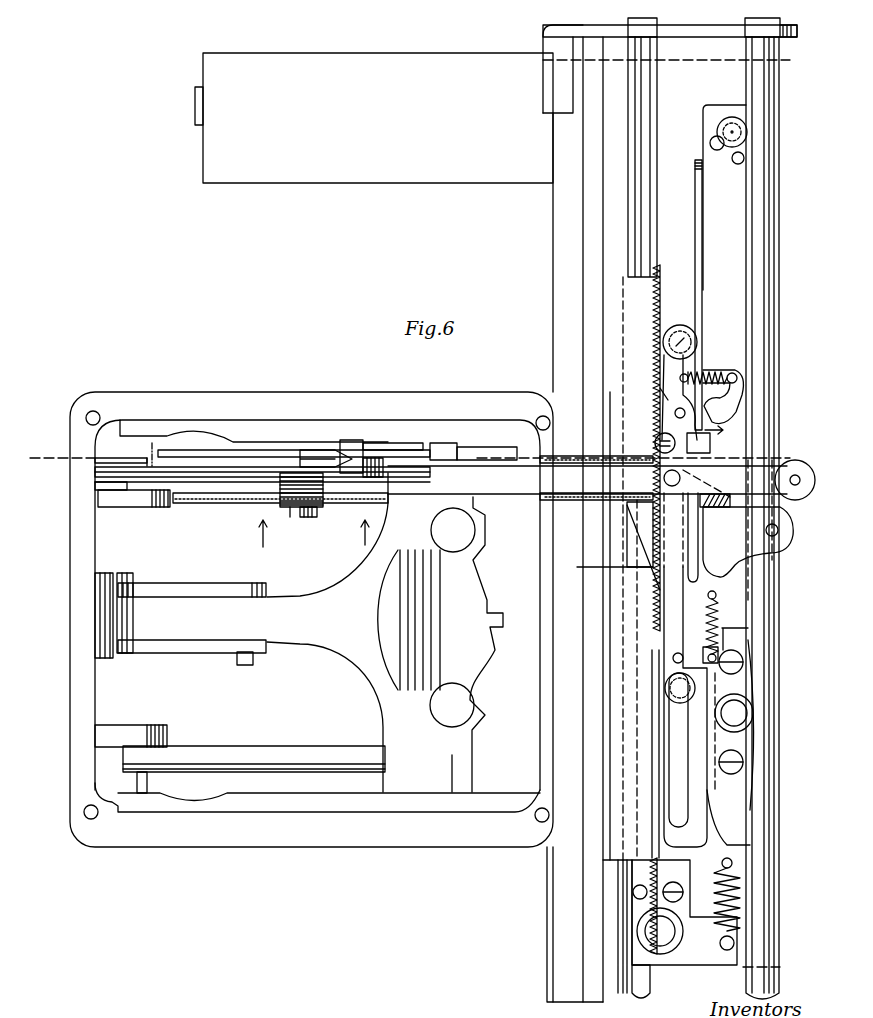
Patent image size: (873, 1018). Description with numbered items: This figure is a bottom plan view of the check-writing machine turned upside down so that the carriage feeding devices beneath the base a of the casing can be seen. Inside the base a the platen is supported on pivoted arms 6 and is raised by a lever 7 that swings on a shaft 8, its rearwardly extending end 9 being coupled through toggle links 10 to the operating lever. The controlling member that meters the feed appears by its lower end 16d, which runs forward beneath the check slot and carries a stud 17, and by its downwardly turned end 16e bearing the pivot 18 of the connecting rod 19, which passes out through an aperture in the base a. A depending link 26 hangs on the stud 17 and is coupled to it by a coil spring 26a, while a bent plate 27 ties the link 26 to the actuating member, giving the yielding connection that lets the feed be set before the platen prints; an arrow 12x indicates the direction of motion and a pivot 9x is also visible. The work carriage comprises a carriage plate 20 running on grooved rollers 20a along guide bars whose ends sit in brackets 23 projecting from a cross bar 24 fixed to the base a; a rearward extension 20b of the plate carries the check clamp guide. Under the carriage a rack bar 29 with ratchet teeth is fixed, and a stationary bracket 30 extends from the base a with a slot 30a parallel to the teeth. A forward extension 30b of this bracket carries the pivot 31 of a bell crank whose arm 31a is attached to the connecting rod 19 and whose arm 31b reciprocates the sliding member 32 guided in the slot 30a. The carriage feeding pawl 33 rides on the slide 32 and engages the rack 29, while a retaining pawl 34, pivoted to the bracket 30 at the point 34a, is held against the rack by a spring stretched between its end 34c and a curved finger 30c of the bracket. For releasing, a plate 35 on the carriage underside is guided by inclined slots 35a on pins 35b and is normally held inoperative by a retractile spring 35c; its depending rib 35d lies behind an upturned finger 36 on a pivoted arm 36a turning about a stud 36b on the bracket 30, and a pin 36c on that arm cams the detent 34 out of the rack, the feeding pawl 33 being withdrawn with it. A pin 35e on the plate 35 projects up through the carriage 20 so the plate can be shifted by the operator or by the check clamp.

The base a is at (311, 619).
The pivoted arms 6 is at (198, 505).
The lever 7 is at (458, 725).
The shaft 8 is at (415, 604).
The rearwardly extending end 9 is at (139, 615).
The pivot 9x is at (422, 467).
The toggle links 10 is at (214, 592).
The direction arrow 12x is at (293, 528).
The lower end of controlling member 16d is at (213, 450).
The depending end of controlling member 16e is at (328, 452).
The stud 17 is at (301, 516).
The pivot 18 is at (362, 438).
The connecting rod 19 is at (587, 468).
The carriage plate 20 is at (695, 210).
The rollers 20a is at (755, 713).
The rearward extension of carriage plate 20b is at (374, 118).
The brackets 23 is at (705, 28).
The cross bar 24 is at (553, 228).
The depending link 26 is at (383, 468).
The coil spring 26a is at (290, 518).
The bent plate 27 is at (182, 468).
The rack bar 29 is at (664, 338).
The stationary bracket 30 is at (675, 605).
The slot 30a is at (672, 782).
The forward extension of bracket 30b is at (770, 580).
The curved finger 30c is at (745, 392).
The pivot 31 is at (777, 538).
The bell crank arm 31a is at (752, 512).
The bell crank arm 31b is at (707, 494).
The sliding member 32 is at (672, 666).
The carriage feeding pawl 33 is at (600, 565).
The retaining pawl 34 is at (737, 380).
The pivot point of retaining pawl 34a is at (662, 392).
The end of retaining pawl 34c is at (712, 363).
The releasing plate 35 is at (724, 197).
The inclined slots 35a is at (710, 141).
The pins 35b is at (732, 117).
The retractile spring 35c is at (737, 905).
The depending rib 35d is at (700, 270).
The pin 35e is at (737, 164).
The upturned finger 36 is at (727, 420).
The pivoted arm 36a is at (603, 456).
The stud 36b is at (690, 338).
The pin 36c is at (655, 443).